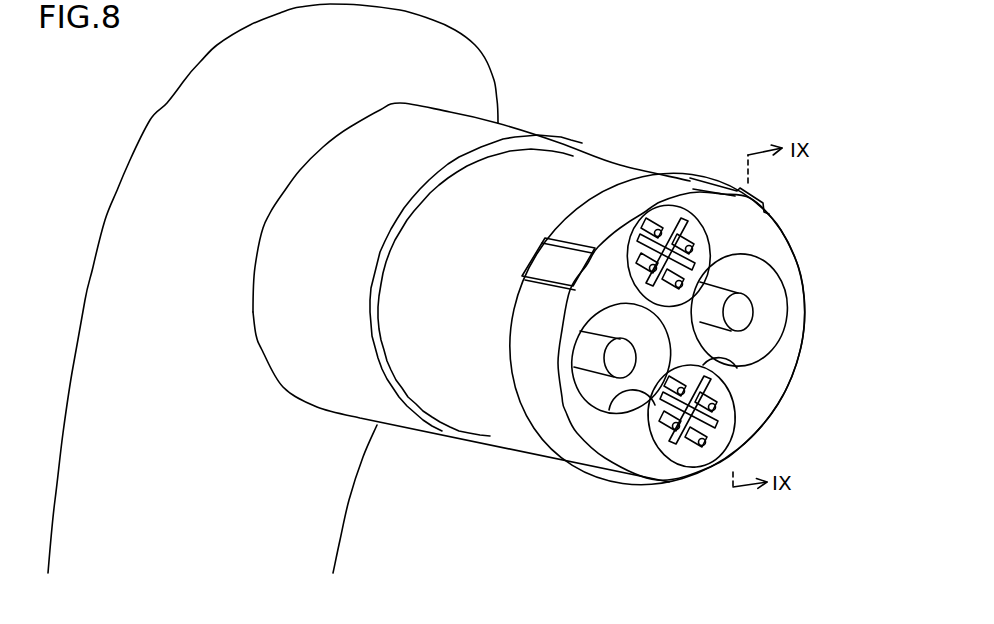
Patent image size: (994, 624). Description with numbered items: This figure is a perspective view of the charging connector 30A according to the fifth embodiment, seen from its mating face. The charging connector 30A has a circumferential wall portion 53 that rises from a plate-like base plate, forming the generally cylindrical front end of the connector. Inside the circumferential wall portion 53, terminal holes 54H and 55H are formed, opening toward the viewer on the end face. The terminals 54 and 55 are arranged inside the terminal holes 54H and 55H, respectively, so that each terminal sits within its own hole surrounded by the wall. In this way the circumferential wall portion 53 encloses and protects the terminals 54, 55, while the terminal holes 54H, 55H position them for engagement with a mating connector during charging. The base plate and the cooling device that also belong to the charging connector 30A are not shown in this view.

The charging connector 30A is at (458, 288).
The circumferential wall portion 53 is at (800, 296).
The terminal 54 is at (622, 358).
The terminal 55 is at (740, 312).
The terminal hole 54H is at (612, 403).
The terminal hole 55H is at (711, 358).